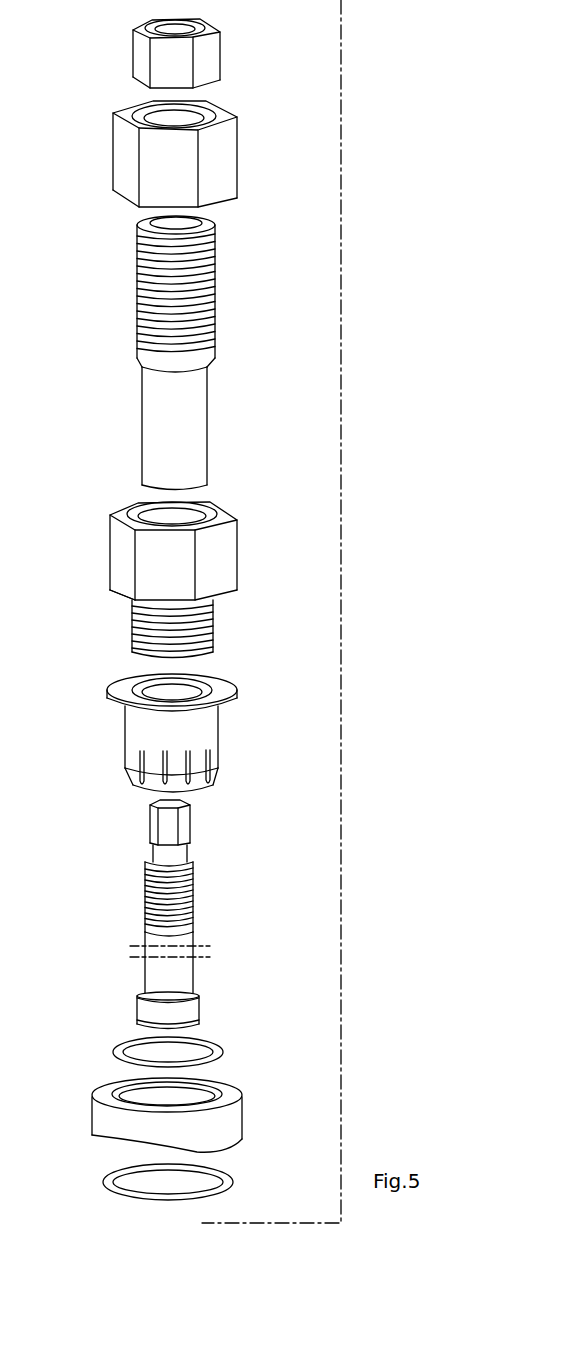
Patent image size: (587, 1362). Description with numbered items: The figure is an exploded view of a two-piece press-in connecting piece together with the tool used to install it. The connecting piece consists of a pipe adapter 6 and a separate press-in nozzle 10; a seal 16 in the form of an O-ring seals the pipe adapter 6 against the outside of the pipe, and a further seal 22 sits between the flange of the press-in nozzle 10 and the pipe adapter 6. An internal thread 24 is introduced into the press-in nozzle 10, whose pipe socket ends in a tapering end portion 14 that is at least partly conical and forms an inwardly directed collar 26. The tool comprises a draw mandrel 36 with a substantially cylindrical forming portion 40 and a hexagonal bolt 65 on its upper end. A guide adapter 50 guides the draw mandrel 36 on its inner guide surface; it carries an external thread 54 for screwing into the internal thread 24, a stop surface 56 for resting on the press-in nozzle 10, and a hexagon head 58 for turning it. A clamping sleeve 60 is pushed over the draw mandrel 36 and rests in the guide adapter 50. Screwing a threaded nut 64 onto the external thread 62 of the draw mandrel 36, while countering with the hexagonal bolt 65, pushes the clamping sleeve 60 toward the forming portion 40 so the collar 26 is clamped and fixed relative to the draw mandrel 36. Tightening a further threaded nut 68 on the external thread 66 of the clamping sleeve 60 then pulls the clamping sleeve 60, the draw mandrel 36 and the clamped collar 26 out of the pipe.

The pipe adapter 6 is at (228, 1125).
The press-in nozzle 10 is at (198, 757).
The tapering end portion 14 is at (207, 800).
The seal 16 is at (222, 1172).
The further seal 22 is at (218, 1047).
The internal thread 24 is at (195, 688).
The collar 26 is at (195, 785).
The draw mandrel 36 is at (180, 975).
The forming portion 40 is at (148, 1010).
The guide adapter 50 is at (345, 565).
The external thread 54 is at (203, 626).
The stop surface 56 is at (118, 596).
The hexagon head 58 is at (223, 570).
The clamping sleeve 60 is at (228, 353).
The external thread 62 is at (188, 897).
The threaded nut 64 is at (210, 53).
The hexagonal bolt 65 is at (153, 825).
The external thread 66 is at (200, 327).
The threaded nut 68 is at (227, 163).